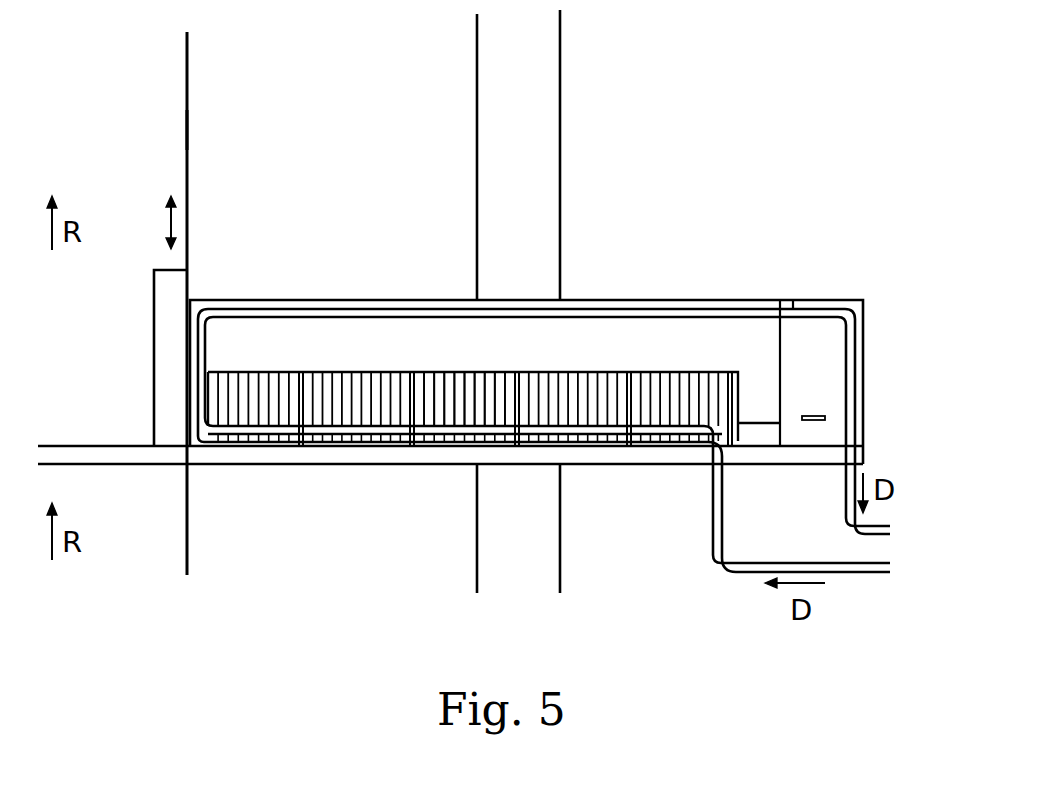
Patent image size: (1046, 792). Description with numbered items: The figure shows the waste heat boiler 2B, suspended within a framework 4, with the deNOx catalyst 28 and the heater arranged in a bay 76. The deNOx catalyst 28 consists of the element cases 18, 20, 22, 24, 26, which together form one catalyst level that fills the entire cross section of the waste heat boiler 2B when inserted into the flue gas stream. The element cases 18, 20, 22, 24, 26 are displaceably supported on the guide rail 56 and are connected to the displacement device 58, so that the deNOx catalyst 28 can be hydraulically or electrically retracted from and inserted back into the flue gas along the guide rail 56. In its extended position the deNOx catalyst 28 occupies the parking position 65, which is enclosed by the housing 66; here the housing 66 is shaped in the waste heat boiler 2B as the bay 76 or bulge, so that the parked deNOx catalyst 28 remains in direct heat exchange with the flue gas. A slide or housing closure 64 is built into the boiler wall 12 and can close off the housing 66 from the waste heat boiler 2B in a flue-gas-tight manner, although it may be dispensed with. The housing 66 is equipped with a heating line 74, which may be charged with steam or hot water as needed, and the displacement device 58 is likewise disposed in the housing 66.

The support wall 12 is at (188, 76).
The waste heat boiler 2B is at (175, 131).
The framework 4 is at (552, 163).
The slide or housing closure 64 is at (154, 308).
The bay 76 is at (300, 300).
The housing 66 is at (627, 297).
The parking position 65 is at (670, 340).
The heating line 74 is at (794, 299).
The guide rail 56 is at (120, 458).
The element case 18 is at (218, 370).
The element case 20 is at (311, 370).
The element case 22 is at (430, 372).
The element case 24 is at (588, 370).
The element case 26 is at (678, 370).
The deNOx catalyst 28 is at (260, 387).
The displacement device 58 is at (792, 417).